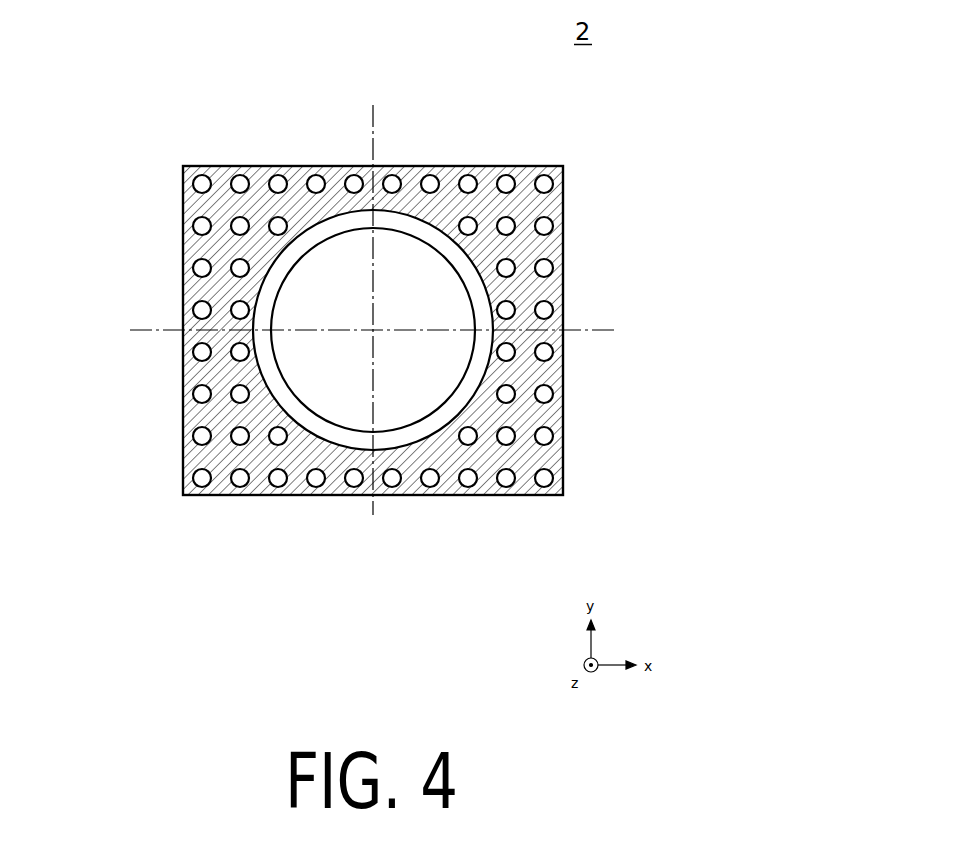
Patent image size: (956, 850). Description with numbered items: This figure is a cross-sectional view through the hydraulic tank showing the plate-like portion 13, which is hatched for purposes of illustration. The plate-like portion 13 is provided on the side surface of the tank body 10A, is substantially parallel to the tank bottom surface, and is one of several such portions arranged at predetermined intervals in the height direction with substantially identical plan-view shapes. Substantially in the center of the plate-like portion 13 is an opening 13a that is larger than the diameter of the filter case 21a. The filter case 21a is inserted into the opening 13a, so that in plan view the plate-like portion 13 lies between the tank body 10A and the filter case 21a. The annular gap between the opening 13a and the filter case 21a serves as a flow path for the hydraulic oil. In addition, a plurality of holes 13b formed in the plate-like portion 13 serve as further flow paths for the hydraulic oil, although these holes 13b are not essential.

The tank body 10A is at (563, 297).
The plate-like portion 13 is at (197, 424).
The opening 13a is at (431, 423).
The holes 13b is at (355, 478).
The filter case 21a is at (294, 263).